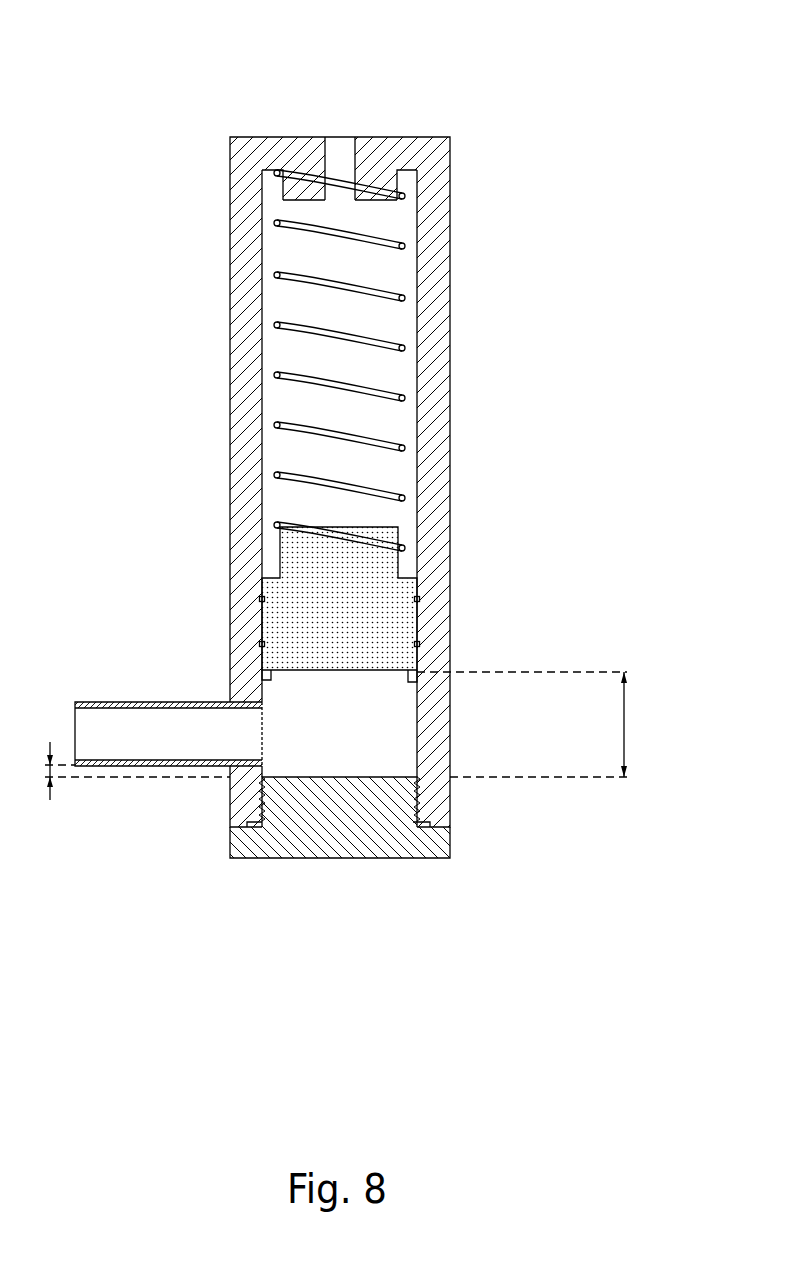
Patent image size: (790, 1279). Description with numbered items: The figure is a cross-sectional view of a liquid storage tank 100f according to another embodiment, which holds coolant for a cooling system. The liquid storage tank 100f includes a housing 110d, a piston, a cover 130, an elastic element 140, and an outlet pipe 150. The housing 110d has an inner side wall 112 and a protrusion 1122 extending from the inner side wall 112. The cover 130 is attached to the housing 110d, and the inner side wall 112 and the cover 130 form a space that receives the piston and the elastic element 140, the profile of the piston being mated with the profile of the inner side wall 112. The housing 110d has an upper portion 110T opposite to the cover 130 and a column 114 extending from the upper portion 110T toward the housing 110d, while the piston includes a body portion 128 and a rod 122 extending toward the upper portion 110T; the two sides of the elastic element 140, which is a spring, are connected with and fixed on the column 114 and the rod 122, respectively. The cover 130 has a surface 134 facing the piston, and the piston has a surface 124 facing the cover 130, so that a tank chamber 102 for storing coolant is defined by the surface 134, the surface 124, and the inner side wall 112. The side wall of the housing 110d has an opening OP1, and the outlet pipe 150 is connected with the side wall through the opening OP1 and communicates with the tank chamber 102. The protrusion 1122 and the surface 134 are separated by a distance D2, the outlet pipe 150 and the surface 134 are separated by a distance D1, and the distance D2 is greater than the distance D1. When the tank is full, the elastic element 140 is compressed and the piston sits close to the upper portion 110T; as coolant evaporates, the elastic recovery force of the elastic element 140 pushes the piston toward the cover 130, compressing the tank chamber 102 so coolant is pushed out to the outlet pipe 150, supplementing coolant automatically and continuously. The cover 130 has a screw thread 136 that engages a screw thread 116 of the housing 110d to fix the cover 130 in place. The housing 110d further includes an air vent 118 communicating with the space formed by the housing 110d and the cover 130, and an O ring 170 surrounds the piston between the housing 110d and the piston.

The liquid storage tank 100f is at (107, 36).
The housing 110d is at (243, 356).
The upper portion 110T is at (403, 128).
The air vent 118 is at (340, 137).
The column 114 is at (382, 182).
The elastic element 140 is at (383, 237).
The inner side wall 112 is at (428, 442).
The rod 122 is at (355, 532).
The body portion 128 is at (280, 621).
The O ring 170 is at (419, 598).
The protrusion 1122 is at (267, 678).
The surface 124 is at (402, 677).
The outlet pipe 150 is at (133, 767).
The opening OP1 is at (262, 731).
The cover 130 is at (337, 840).
The tank chamber 102 is at (380, 765).
The screw thread 136 is at (413, 800).
The surface 134 is at (414, 782).
The screw thread 116 is at (428, 805).
The distance D1 is at (116, 771).
The distance D2 is at (541, 724).